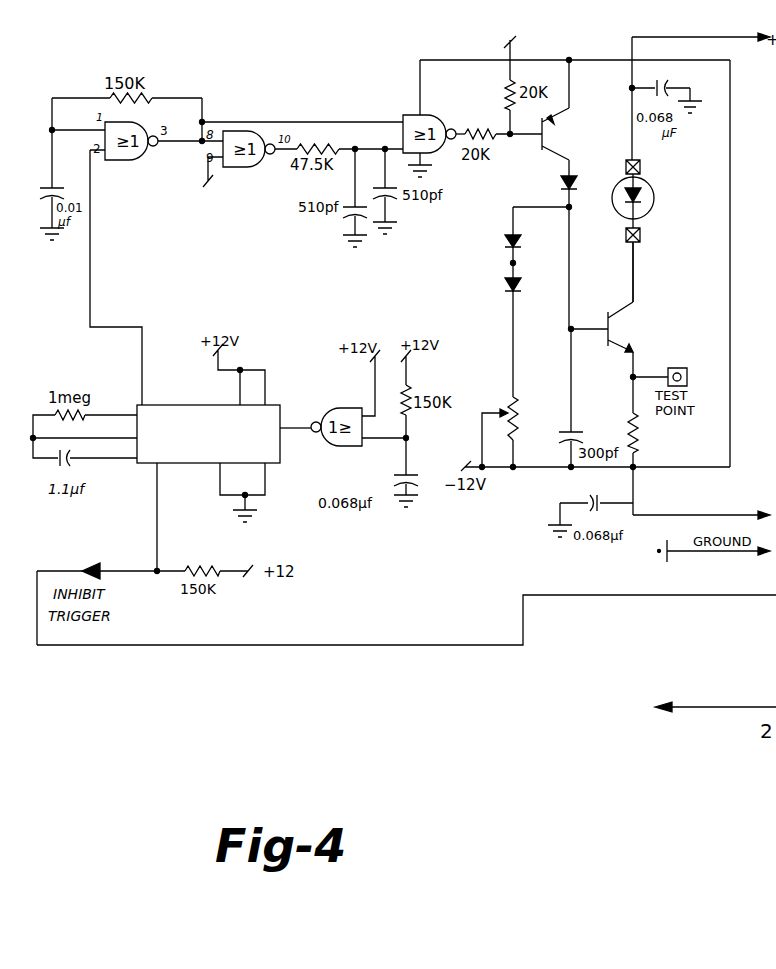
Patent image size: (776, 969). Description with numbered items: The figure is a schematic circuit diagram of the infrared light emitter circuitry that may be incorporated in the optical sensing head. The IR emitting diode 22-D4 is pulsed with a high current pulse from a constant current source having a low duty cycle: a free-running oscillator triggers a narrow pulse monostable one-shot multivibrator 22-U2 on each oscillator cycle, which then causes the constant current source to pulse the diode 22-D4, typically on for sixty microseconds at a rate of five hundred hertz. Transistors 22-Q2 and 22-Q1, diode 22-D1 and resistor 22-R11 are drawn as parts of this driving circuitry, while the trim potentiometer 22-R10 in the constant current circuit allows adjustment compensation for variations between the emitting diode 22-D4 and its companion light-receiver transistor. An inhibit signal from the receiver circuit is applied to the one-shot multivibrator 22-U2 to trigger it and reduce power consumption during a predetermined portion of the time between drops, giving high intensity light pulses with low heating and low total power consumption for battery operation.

The transistor 22-Q2 is at (574, 118).
The diode 22-D1 is at (531, 189).
The IR emitting diode 22-D4 is at (653, 231).
The transistor 2N5308 22-Q1 is at (631, 310).
The trim potentiometer 22-R10 is at (526, 426).
The resistor 22 ohm 22-R11 is at (665, 446).
The one-shot multivibrator 22-U2 is at (208, 423).